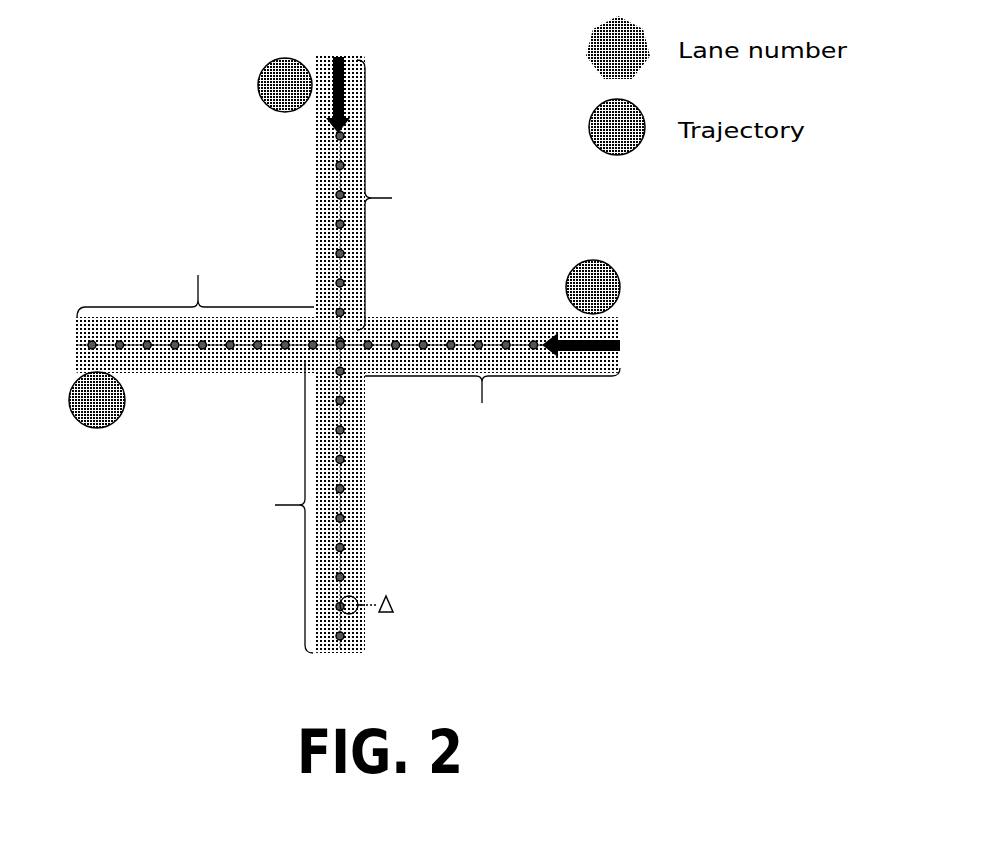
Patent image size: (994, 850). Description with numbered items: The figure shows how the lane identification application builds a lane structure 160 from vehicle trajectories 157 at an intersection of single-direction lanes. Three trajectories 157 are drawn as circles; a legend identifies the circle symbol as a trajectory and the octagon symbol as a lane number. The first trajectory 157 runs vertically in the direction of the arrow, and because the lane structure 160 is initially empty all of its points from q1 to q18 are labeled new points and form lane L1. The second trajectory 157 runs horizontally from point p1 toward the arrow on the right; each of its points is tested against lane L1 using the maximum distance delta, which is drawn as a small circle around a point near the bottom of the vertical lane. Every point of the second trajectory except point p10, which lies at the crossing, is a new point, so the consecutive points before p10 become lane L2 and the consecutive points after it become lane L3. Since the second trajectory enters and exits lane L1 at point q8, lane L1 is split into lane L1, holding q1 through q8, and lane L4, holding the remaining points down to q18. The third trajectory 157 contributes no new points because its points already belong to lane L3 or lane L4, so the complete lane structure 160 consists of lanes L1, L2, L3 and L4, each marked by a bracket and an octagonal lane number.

The vehicle trajectories 157 is at (265, 107).
The lane structure 160 is at (387, 355).
The lane L1 is at (408, 195).
The lane L2 is at (195, 262).
The lane L3 is at (492, 421).
The lane L4 is at (261, 507).
The point q1 is at (345, 133).
The point q8 is at (338, 338).
The point q18 is at (342, 638).
The point p1 is at (92, 345).
The point p10 is at (340, 346).